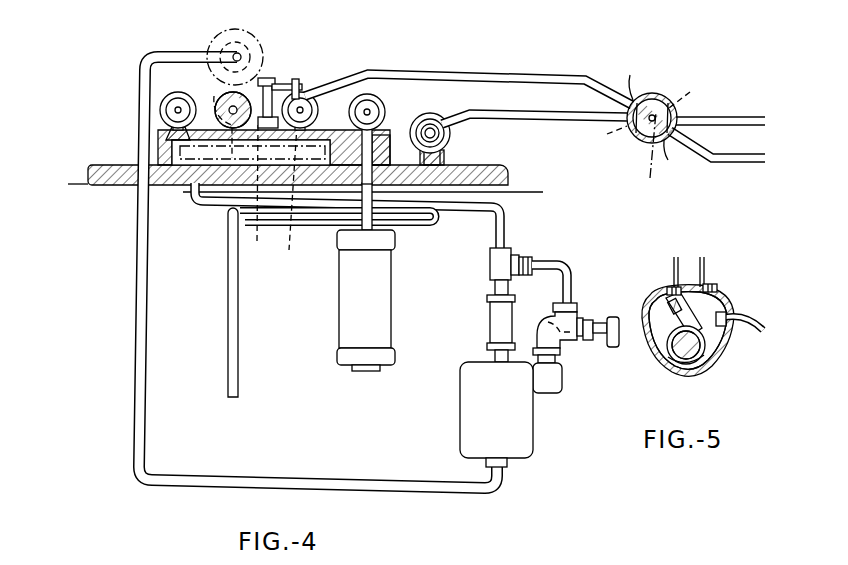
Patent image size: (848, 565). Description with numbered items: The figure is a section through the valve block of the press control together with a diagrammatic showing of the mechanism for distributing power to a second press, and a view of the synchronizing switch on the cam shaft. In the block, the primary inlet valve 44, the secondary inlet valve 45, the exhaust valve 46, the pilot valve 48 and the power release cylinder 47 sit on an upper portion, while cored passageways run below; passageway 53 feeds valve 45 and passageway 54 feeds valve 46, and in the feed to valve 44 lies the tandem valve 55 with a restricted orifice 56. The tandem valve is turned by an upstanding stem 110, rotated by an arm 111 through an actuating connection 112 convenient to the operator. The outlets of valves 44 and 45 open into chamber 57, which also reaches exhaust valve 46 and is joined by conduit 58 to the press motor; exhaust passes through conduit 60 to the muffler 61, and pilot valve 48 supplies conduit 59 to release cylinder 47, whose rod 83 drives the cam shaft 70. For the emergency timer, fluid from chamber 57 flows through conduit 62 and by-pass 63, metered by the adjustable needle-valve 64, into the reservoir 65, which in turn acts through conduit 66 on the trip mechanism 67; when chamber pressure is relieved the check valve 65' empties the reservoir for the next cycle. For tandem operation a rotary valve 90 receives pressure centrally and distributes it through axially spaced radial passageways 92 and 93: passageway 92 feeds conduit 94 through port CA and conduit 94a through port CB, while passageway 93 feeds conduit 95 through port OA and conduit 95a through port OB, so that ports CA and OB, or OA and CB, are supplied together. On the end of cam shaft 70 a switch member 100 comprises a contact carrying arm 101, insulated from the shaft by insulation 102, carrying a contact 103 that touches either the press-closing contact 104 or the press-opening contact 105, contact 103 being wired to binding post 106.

In FIG. 4, the fluid pressure actuated trip mechanism 67 is at (262, 42).
In FIG. 4, the upstanding stem 110 is at (268, 78).
In FIG. 4, the arm 111 is at (288, 86).
In FIG. 4, the actuating connection 112 is at (302, 86).
In FIG. 4, the secondary inlet valve 45 is at (167, 100).
In FIG. 4, the passageway 54 is at (215, 117).
In FIG. 4, the pilot valve 48 is at (233, 100).
In FIG. 4, the primary inlet valve 44 is at (308, 100).
In FIG. 4, the exhaust valve 46 is at (383, 104).
In FIG. 4, the power release cylinder 47 is at (441, 113).
In FIG. 4, the conduit 94 is at (478, 79).
In FIG. 4, the passageway 53 is at (158, 140).
In FIG. 4, the rod 83 is at (440, 137).
In FIG. 4, the conduit 95 is at (538, 118).
In FIG. 4, the chamber 57 is at (182, 158).
In FIG. 4, the conduit 62 is at (219, 209).
In FIG. 4, the tandem valve 55 is at (256, 191).
In FIG. 4, the restricted orifice 56 is at (289, 195).
In FIG. 4, the conduit 60 is at (362, 213).
In FIG. 4, the conduit 59 is at (412, 224).
In FIG. 4, the by-pass 63 is at (556, 262).
In FIG. 4, the conduit 58 is at (225, 301).
In FIG. 4, the muffler 61 is at (354, 312).
In FIG. 4, the check valve 65' is at (481, 321).
In FIG. 4, the adjustable needle-valve 64 is at (560, 336).
In FIG. 4, the reservoir 65 is at (493, 414).
In FIG. 4, the conduit 66 is at (289, 480).
In FIG. 4, the rotary valve 90 is at (658, 100).
In FIG. 4, the radial passageway 92 is at (638, 137).
In FIG. 4, the radial passageway 93 is at (648, 155).
In FIG. 4, the port CA is at (626, 80).
In FIG. 4, the port OB is at (690, 93).
In FIG. 4, the port OA is at (608, 134).
In FIG. 4, the port CB is at (672, 158).
In FIG. 4, the conduit 95a is at (742, 117).
In FIG. 4, the conduit 94a is at (746, 162).
In FIG. 5, the press-opening contact 105 is at (675, 288).
In FIG. 5, the press-closing contact 104 is at (709, 287).
In FIG. 5, the switch member 100 is at (718, 297).
In FIG. 5, the contact 103 is at (654, 299).
In FIG. 5, the contact carrying arm 101 is at (660, 335).
In FIG. 5, the insulation 102 is at (682, 362).
In FIG. 5, the cam shaft 70 is at (698, 357).
In FIG. 5, the binding post 106 is at (734, 333).